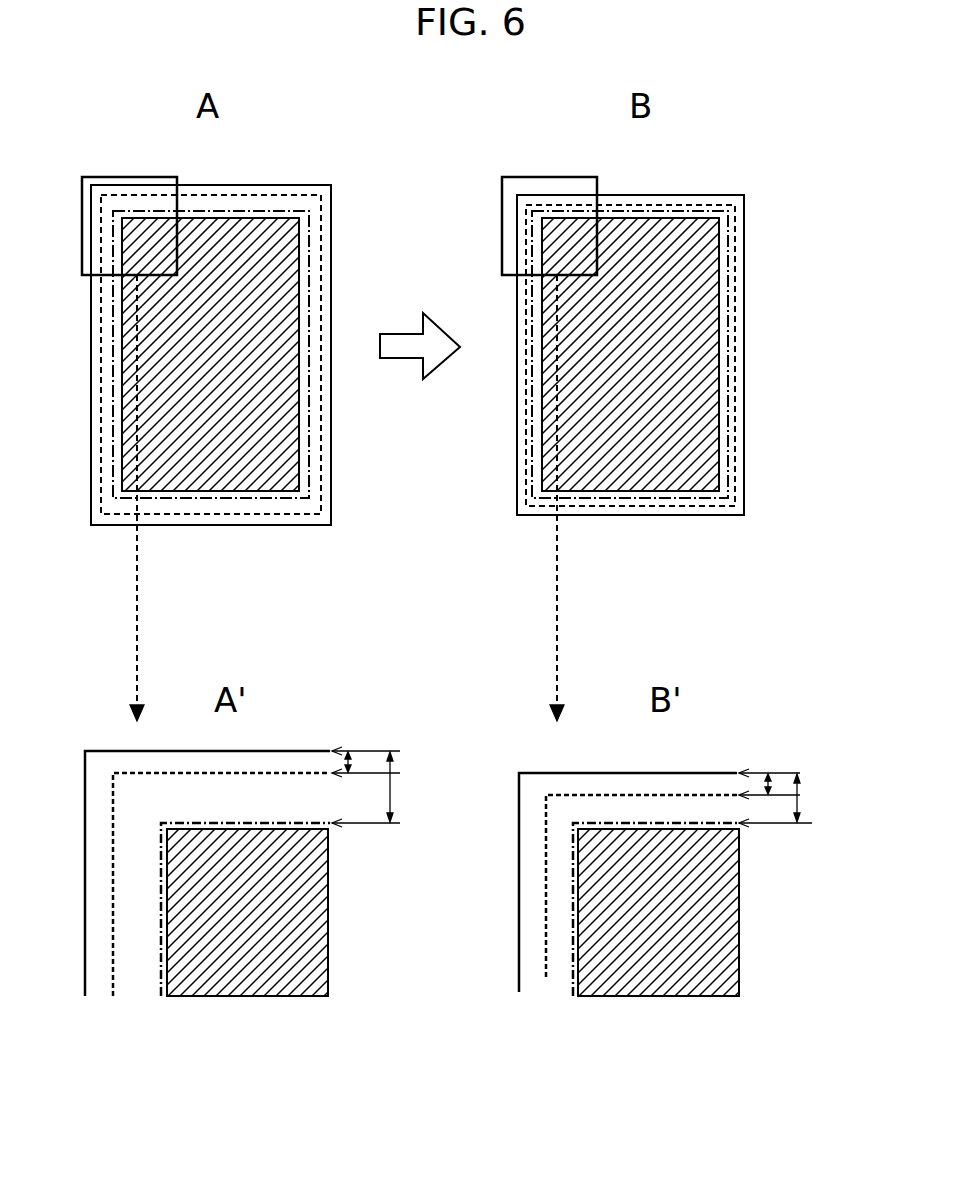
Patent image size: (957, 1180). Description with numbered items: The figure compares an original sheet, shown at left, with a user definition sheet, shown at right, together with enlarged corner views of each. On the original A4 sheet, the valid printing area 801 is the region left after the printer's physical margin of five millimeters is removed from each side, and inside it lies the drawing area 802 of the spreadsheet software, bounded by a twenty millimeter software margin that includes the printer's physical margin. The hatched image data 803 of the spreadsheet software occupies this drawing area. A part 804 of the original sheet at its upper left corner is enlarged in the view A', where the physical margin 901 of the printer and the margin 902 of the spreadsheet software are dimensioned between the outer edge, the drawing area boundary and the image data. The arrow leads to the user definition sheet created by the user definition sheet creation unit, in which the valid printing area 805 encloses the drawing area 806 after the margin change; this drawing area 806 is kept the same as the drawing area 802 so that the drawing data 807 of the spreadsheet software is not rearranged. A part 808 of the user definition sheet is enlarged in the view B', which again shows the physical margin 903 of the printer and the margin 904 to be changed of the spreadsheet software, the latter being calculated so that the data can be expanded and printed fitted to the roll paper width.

The valid printing area of the original sheet 801 is at (247, 195).
The drawing area of the spreadsheet software in the original sheet 802 is at (309, 240).
The image data of the spreadsheet software 803 is at (300, 447).
The part of the original sheet 804 is at (128, 177).
The valid printing area of the user definition sheet 805 is at (702, 205).
The drawing area after the margin change 806 is at (728, 291).
The drawing data of the spreadsheet software 807 is at (719, 447).
The part of the user definition sheet 808 is at (545, 177).
The physical margin of the printer 901 is at (348, 762).
The margin of the spreadsheet software 902 is at (390, 788).
The physical margin of the printer 903 is at (769, 784).
The margin to be changed of the spreadsheet software 904 is at (797, 797).